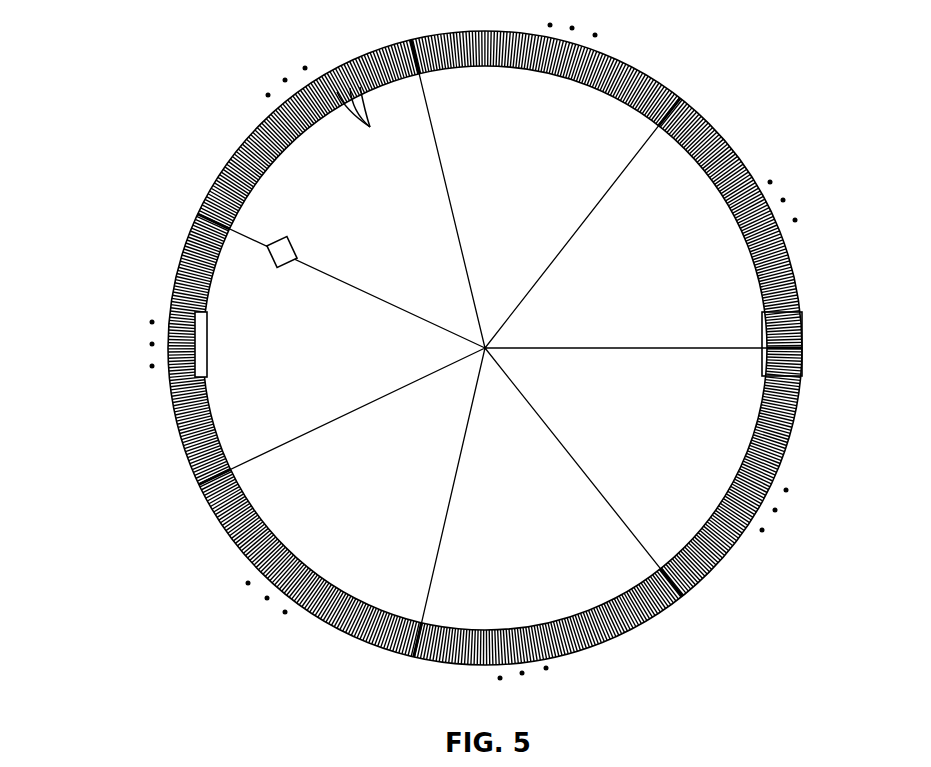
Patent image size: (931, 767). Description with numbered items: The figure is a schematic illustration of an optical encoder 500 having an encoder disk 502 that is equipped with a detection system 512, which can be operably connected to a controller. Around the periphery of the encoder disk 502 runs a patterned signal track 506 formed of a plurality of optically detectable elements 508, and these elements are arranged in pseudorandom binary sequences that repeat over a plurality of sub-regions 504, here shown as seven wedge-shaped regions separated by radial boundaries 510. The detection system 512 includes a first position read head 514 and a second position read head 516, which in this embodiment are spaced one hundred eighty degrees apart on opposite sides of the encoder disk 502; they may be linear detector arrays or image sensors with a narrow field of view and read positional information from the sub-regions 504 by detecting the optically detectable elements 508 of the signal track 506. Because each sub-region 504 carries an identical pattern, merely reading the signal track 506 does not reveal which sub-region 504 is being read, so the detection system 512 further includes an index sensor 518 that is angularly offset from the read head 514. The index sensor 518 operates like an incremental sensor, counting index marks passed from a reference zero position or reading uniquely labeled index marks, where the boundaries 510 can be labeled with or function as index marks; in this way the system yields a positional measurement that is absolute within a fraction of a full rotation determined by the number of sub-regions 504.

The optical encoder 500 is at (120, 170).
The encoder disk 502 is at (746, 162).
The sub-regions 504 is at (477, 350).
The patterned signal track 506 is at (268, 122).
The optically detectable elements 508 is at (363, 122).
The boundaries 510 is at (432, 121).
The detection system 512 is at (128, 308).
The first position read head 514 is at (209, 343).
The second position read head 516 is at (760, 325).
The index sensor 518 is at (288, 238).